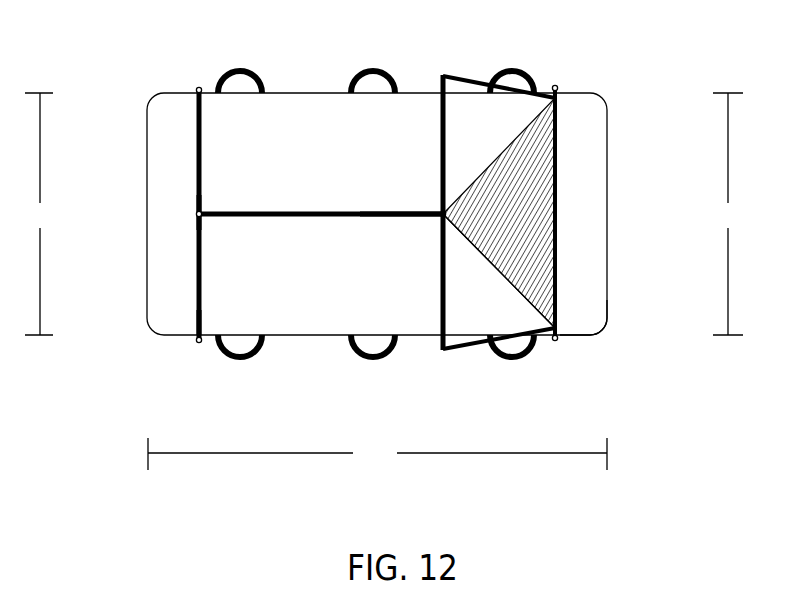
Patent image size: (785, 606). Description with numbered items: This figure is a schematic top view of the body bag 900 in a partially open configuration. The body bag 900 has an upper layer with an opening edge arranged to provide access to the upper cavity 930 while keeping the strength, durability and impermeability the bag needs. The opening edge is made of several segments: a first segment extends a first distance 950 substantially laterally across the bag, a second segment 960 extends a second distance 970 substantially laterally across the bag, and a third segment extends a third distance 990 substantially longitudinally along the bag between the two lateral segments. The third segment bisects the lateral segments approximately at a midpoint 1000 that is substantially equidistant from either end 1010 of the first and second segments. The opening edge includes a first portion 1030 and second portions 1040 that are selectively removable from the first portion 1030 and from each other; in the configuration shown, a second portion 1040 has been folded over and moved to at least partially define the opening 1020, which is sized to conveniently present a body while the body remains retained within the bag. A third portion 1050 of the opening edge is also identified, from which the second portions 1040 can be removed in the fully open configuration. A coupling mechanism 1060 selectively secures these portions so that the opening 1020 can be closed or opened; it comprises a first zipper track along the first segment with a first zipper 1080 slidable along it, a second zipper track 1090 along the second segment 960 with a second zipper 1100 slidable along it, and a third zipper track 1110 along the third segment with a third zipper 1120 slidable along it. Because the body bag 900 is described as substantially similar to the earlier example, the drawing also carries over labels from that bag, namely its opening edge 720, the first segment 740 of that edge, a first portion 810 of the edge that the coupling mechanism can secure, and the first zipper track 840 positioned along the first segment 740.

The body bag 900 is at (637, 443).
The upper cavity 930 is at (542, 282).
The first distance 950 is at (730, 214).
The second segment 960 is at (209, 137).
The second distance 970 is at (40, 214).
The third distance 990 is at (377, 454).
The midpoint 1000 is at (193, 215).
The end 1010 is at (198, 82).
The opening 1020 is at (535, 212).
The first portion 1030 is at (590, 108).
The second portion 1040 is at (465, 97).
The third portion 1050 is at (163, 113).
The coupling mechanism 1060 is at (349, 208).
The first zipper 1080 is at (558, 80).
The second zipper track 1090 is at (208, 207).
The second zipper 1100 is at (437, 223).
The third zipper track 1110 is at (403, 198).
The third zipper 1120 is at (208, 326).
The opening edge 720 is at (562, 167).
The first segment 740 is at (568, 252).
The first portion 810 is at (580, 318).
The first zipper track 840 is at (562, 134).